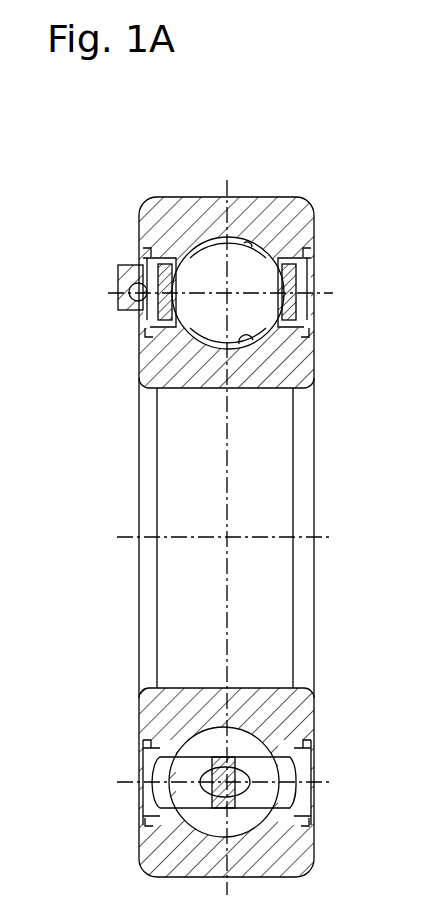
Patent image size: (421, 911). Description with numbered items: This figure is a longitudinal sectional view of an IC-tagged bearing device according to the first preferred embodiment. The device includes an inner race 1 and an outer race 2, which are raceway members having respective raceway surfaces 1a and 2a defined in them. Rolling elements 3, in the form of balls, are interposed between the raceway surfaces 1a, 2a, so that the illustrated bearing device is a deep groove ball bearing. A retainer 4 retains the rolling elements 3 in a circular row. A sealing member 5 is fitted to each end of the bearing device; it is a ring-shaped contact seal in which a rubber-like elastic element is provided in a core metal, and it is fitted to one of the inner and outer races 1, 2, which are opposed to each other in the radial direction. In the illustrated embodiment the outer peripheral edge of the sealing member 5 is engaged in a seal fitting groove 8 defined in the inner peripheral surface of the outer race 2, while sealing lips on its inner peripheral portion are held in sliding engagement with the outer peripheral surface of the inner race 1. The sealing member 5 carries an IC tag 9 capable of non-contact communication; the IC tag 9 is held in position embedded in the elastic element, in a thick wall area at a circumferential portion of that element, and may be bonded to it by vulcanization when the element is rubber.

The inner race 1 is at (197, 373).
The raceway surface 1a is at (260, 347).
The outer race 2 is at (213, 215).
The raceway surface 2a is at (258, 247).
The rolling elements 3 is at (218, 257).
The retainer 4 is at (122, 312).
The sealing member 5 is at (135, 323).
The seal fitting groove 8 is at (143, 248).
The IC tag 9 is at (130, 291).